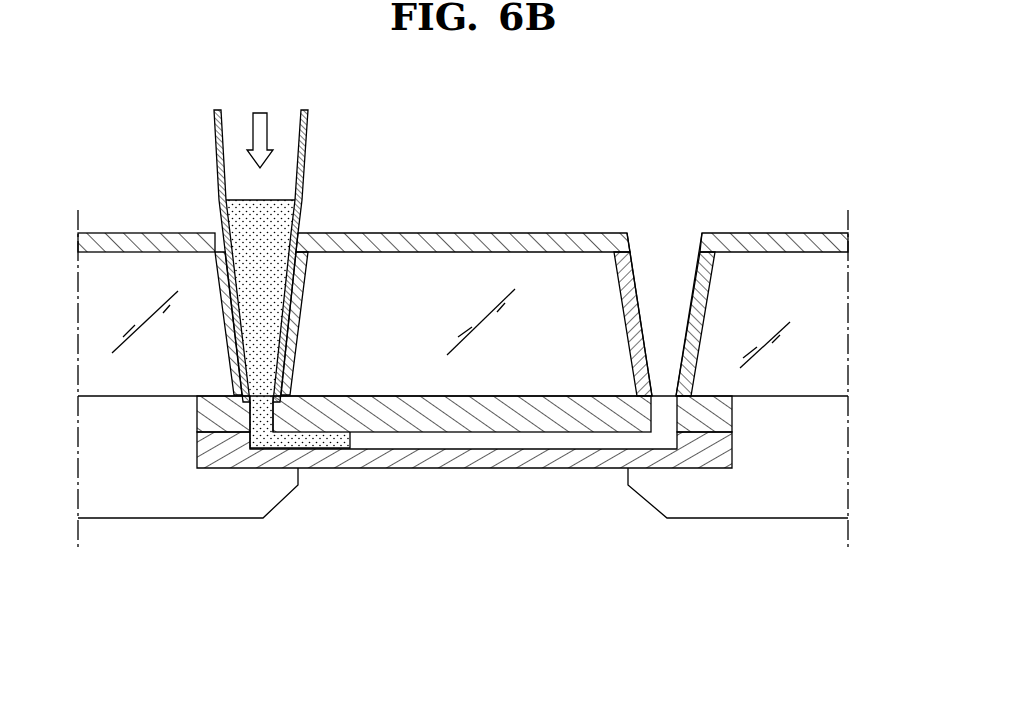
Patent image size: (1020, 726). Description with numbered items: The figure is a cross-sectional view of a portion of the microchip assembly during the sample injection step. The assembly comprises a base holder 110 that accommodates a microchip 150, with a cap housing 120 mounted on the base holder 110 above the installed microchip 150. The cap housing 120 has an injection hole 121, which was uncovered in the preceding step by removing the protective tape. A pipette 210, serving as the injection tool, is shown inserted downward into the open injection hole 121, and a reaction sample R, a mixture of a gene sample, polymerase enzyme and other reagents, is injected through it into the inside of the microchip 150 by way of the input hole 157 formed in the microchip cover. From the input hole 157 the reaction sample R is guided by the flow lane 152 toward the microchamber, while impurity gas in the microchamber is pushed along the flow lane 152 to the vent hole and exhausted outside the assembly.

The base holder 110 is at (825, 450).
The cap housing 120 is at (825, 280).
The injection hole 121 is at (240, 265).
The microchip 150 is at (453, 500).
The flow lane 152 is at (338, 452).
The input hole 157 is at (254, 418).
The pipette 210 is at (308, 125).
The reaction sample R is at (272, 222).